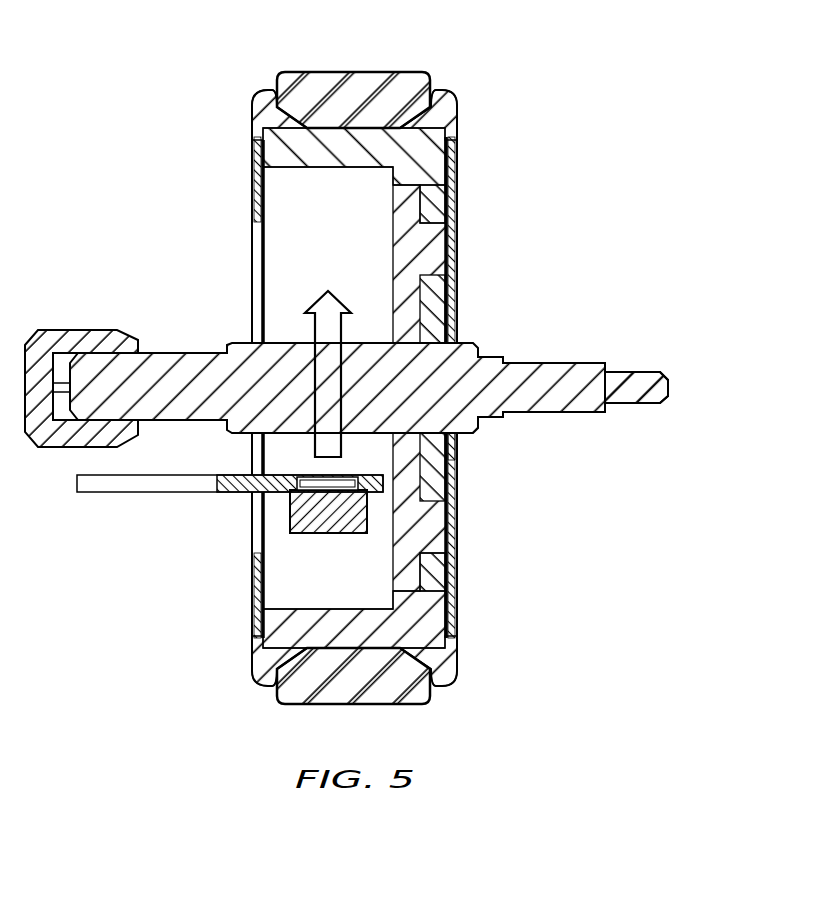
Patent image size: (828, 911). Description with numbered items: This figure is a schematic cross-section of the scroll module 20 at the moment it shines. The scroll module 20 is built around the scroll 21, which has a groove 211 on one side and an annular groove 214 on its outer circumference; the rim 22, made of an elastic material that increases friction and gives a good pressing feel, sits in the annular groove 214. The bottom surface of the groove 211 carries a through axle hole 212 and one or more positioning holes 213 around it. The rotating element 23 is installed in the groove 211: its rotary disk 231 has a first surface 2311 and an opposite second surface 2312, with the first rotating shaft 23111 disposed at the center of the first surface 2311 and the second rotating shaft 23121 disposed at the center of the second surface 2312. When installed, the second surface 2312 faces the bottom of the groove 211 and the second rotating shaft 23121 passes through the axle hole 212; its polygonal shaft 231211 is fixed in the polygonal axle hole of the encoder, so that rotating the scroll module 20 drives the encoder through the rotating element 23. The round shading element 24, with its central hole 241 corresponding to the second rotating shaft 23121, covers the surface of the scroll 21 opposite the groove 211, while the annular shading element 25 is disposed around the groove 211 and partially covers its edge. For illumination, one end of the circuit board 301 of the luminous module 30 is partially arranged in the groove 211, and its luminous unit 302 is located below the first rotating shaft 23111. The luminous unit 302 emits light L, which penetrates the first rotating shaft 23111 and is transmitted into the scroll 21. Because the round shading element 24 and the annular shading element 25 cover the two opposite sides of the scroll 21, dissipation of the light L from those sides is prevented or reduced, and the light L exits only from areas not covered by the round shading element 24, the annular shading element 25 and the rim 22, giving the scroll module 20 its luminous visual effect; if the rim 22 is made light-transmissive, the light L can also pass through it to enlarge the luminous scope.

The scroll module 20 is at (676, 523).
The scroll 21 is at (462, 658).
The groove 211 is at (258, 658).
The axle hole 212 is at (432, 452).
The positioning hole 213 is at (437, 305).
The annular groove 214 is at (388, 78).
The rim 22 is at (330, 83).
The rotating element 23 is at (373, 357).
The rotary disk 231 is at (409, 185).
The first surface 2311 is at (392, 212).
The first rotating shaft 23111 is at (243, 341).
The second surface 2312 is at (426, 207).
The second rotating shaft 23121 is at (432, 248).
The polygonal shaft 231211 is at (583, 397).
The round shading element 24 is at (453, 575).
The central hole 241 is at (448, 438).
The annular shading element 25 is at (253, 173).
The luminous module 30 is at (230, 540).
The circuit board 301 is at (123, 484).
The luminous unit 302 is at (317, 503).
The light L is at (313, 296).